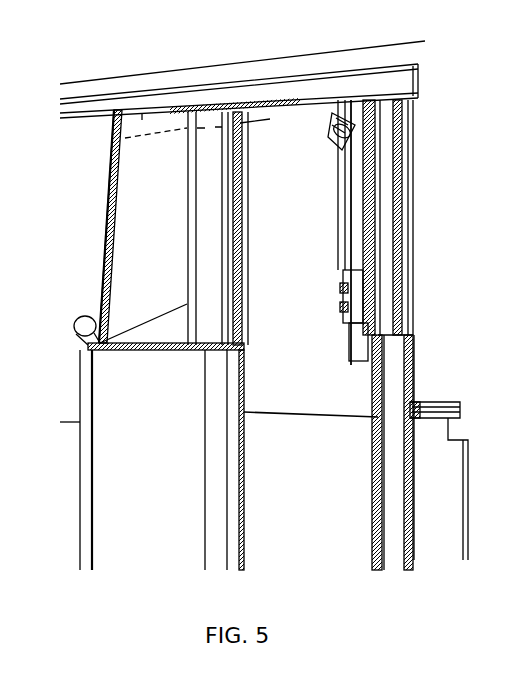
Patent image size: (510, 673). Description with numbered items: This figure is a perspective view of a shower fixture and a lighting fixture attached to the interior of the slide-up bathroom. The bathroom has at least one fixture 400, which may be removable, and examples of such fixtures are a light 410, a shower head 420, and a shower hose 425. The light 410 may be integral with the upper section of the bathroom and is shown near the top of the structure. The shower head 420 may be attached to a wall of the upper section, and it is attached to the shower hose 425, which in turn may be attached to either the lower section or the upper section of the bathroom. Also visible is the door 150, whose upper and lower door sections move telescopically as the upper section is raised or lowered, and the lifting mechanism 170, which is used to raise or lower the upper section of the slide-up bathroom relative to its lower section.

The door 150 is at (108, 233).
The lifting mechanism 170 is at (99, 343).
The fixture 400 is at (370, 148).
The light 410 is at (270, 119).
The shower head 420 is at (338, 145).
The shower hose 425 is at (338, 228).